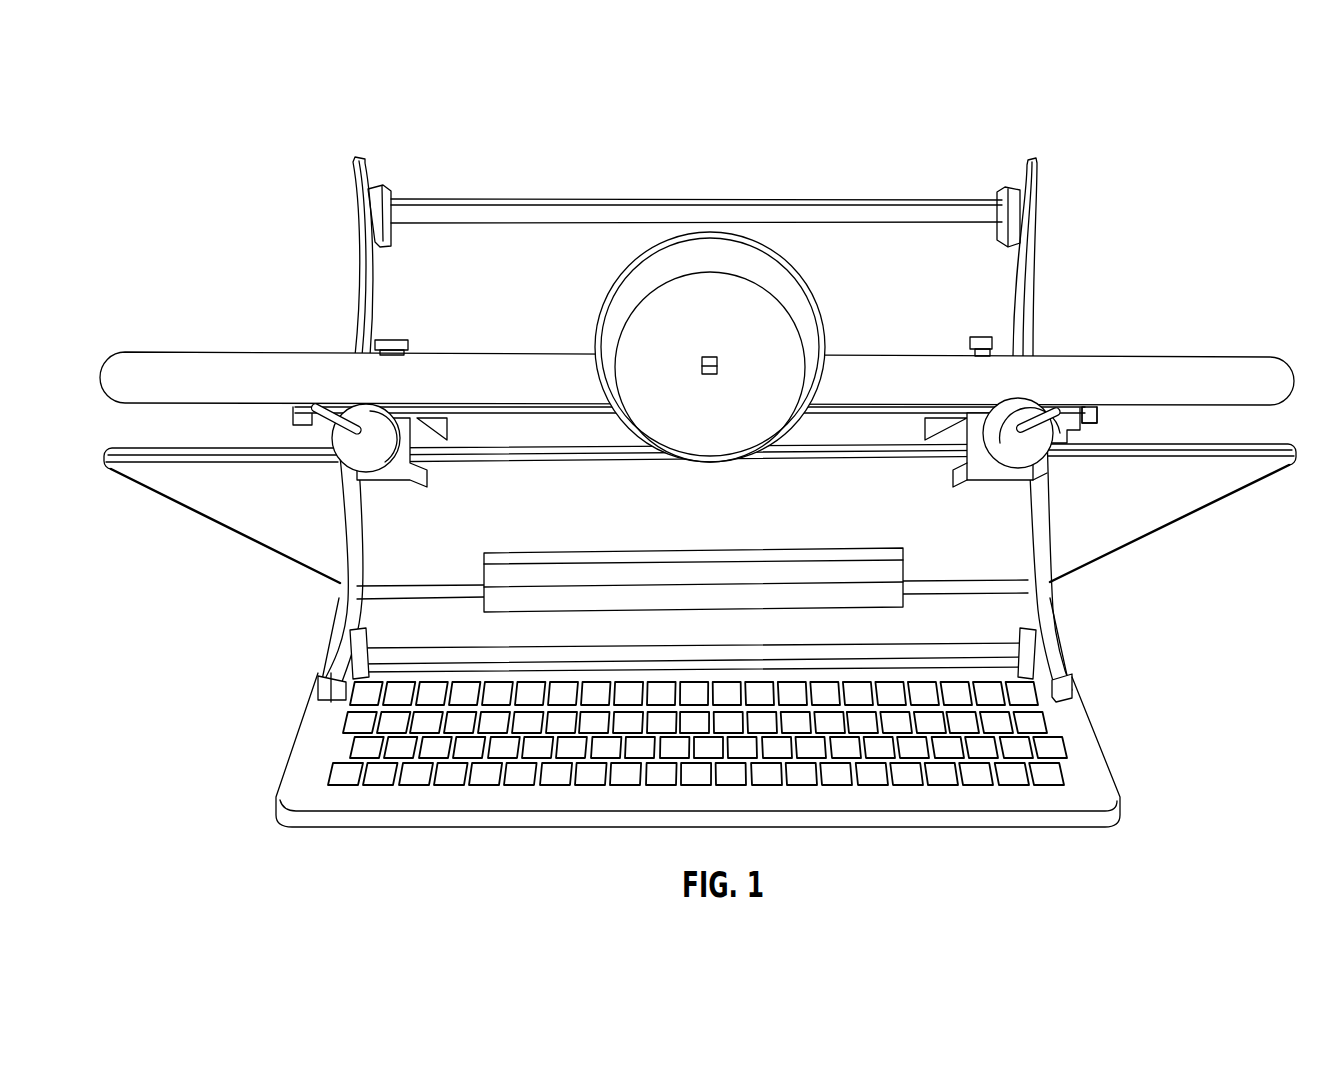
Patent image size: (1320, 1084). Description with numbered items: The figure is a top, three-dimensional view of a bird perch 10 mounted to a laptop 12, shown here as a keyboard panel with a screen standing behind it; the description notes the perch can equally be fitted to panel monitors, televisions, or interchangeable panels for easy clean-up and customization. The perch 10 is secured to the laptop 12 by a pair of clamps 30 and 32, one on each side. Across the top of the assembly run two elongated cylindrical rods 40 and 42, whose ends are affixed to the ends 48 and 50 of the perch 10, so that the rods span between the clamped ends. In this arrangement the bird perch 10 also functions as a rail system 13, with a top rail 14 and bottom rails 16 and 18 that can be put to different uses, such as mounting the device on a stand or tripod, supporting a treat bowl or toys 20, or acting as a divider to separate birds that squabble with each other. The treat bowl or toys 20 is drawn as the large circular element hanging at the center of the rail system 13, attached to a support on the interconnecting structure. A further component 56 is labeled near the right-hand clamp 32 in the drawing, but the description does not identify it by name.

The bird perch 10 is at (543, 177).
The laptop 12 is at (487, 443).
The rail system 13 is at (288, 280).
The top rail 14 is at (910, 377).
The bottom rail 16 is at (883, 213).
The bottom rail 18 is at (892, 657).
The treat bowl or toys 20 is at (702, 265).
The clamp 30 is at (1018, 470).
The clamp 32 is at (390, 467).
The elongated cylindrical rod 40 is at (367, 423).
The elongated cylindrical rod 42 is at (840, 390).
The end of the perch 48 is at (360, 427).
The end of the perch 50 is at (1010, 425).
The hinge bracket 56 is at (1030, 425).